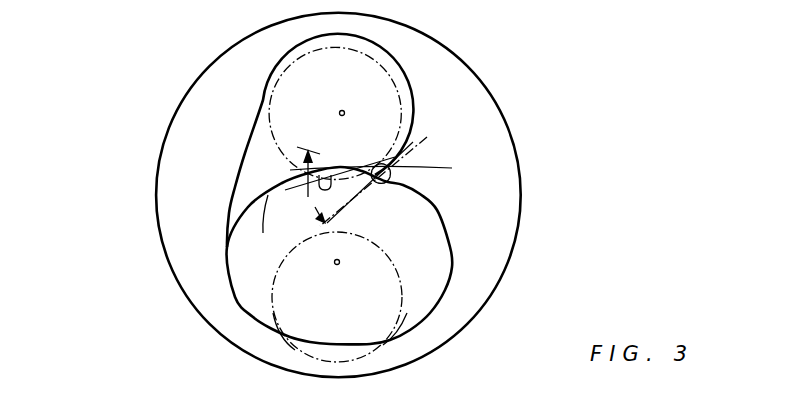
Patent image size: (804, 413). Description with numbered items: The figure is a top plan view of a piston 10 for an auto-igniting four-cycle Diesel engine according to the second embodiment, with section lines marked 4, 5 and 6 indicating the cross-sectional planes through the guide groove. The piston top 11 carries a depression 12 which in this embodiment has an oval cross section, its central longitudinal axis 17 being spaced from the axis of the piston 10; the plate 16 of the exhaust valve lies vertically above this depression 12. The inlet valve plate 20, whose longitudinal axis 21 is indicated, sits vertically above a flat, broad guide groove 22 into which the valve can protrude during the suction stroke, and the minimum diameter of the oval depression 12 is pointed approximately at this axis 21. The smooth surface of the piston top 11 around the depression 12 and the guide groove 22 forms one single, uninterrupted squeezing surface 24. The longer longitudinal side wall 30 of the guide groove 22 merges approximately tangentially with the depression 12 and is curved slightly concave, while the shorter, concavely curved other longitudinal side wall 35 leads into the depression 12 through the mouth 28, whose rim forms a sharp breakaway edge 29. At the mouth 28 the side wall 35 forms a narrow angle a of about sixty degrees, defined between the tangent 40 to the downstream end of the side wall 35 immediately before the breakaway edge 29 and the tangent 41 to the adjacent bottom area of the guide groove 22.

The section line 4- 4 is at (155, 3).
The section line 5- 5 is at (100, 81).
The section line 6- 6 is at (82, 188).
The piston 10 is at (191, 311).
The piston top 11 is at (251, 338).
The depression 12 is at (320, 313).
The exhaust valve plate 16 is at (408, 258).
The central longitudinal axis of the depression 17 is at (340, 264).
The inlet valve plate 20 is at (398, 147).
The longitudinal axis of the inlet valve plate 21 is at (341, 109).
The guide groove 22 is at (386, 173).
The squeezing surface 24 is at (504, 268).
The mouth of the guide groove 28 is at (259, 228).
The breakaway edge 29 is at (319, 174).
The longitudinal side wall 30 is at (238, 158).
The other longitudinal side wall 35 is at (405, 182).
The tangent 40 is at (426, 138).
The tangent 41 is at (357, 170).
The angle a is at (311, 185).